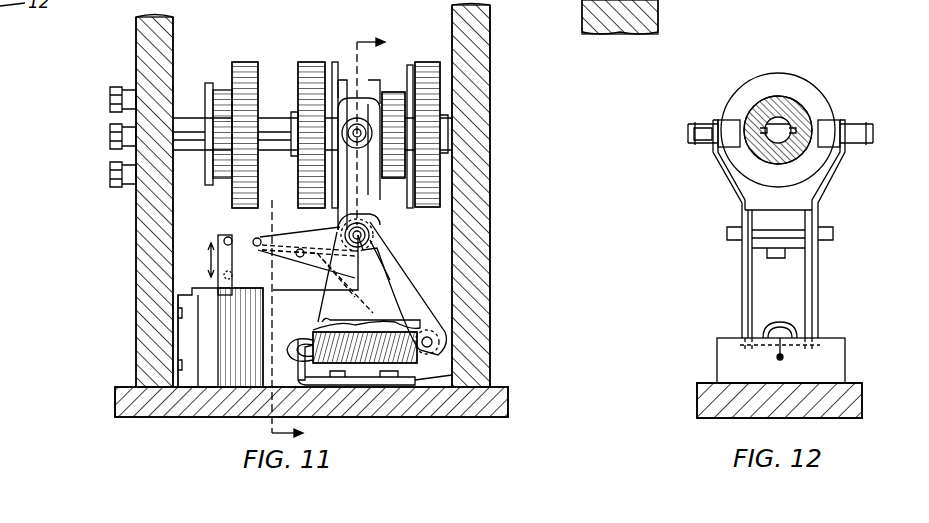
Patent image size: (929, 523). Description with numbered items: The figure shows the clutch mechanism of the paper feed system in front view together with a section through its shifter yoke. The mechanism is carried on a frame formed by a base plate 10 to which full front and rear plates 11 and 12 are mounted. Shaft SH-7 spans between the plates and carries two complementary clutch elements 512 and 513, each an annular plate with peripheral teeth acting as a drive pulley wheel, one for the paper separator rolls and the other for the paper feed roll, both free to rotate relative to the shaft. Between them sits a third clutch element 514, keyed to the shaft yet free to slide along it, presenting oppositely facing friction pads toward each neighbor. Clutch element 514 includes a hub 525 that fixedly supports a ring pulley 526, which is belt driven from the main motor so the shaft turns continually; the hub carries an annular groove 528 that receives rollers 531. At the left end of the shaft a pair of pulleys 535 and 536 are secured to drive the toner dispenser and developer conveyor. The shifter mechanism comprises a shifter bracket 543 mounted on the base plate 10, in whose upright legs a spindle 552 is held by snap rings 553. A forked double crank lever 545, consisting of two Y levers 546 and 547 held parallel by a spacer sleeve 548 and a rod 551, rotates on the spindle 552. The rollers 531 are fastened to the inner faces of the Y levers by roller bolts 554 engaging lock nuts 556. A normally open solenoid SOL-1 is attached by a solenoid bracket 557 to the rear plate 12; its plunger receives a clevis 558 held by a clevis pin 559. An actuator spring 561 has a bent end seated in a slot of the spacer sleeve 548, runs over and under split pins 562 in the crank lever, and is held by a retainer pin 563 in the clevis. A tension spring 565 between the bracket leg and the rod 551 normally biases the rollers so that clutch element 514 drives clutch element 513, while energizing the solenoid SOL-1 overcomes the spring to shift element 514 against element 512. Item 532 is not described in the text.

In FIG. 11, the base plate 10 is at (508, 400).
In FIG. 12, the base plate 10 is at (862, 402).
In FIG. 11, the front plate 11 is at (582, 8).
In FIG. 11, the rear plate 12 is at (118, 338).
In FIG. 11, the shaft SH-7 is at (185, 118).
In FIG. 12, the shaft SH-7 is at (775, 112).
In FIG. 11, the clutch element 512 is at (312, 62).
In FIG. 11, the clutch element 513 is at (428, 62).
In FIG. 11, the third clutch element 514 is at (360, 98).
In FIG. 12, the hub 525 is at (812, 115).
In FIG. 11, the ring pulley 526 is at (393, 92).
In FIG. 12, the annular groove 528 is at (815, 98).
In FIG. 12, the rollers 531 is at (728, 120).
In FIG. 11, the arm end 532 is at (380, 207).
In FIG. 11, the pulley 535 is at (220, 90).
In FIG. 11, the pulley 536 is at (247, 62).
In FIG. 11, the shifter bracket 543 is at (390, 280).
In FIG. 12, the shifter bracket 543 is at (845, 360).
In FIG. 12, the forked double crank lever 545 is at (848, 160).
In FIG. 12, the Y lever 546 is at (724, 178).
In FIG. 12, the Y lever 547 is at (830, 190).
In FIG. 11, the spacer sleeve 548 is at (357, 240).
In FIG. 12, the spacer sleeve 548 is at (798, 250).
In FIG. 11, the rod 551 is at (424, 336).
In FIG. 11, the spindle 552 is at (372, 235).
In FIG. 11, the snap rings 553 is at (383, 250).
In FIG. 12, the roller bolts 554 is at (688, 134).
In FIG. 12, the lock nuts 556 is at (697, 142).
In FIG. 11, the solenoid bracket 557 is at (178, 362).
In FIG. 11, the clevis 558 is at (220, 240).
In FIG. 11, the clevis pin 559 is at (233, 274).
In FIG. 11, the actuator spring 561 is at (325, 258).
In FIG. 11, the split pins 562 is at (262, 240).
In FIG. 11, the retainer pin 563 is at (235, 232).
In FIG. 11, the tension spring 565 is at (318, 327).
In FIG. 11, the solenoid SOL-1 is at (200, 323).